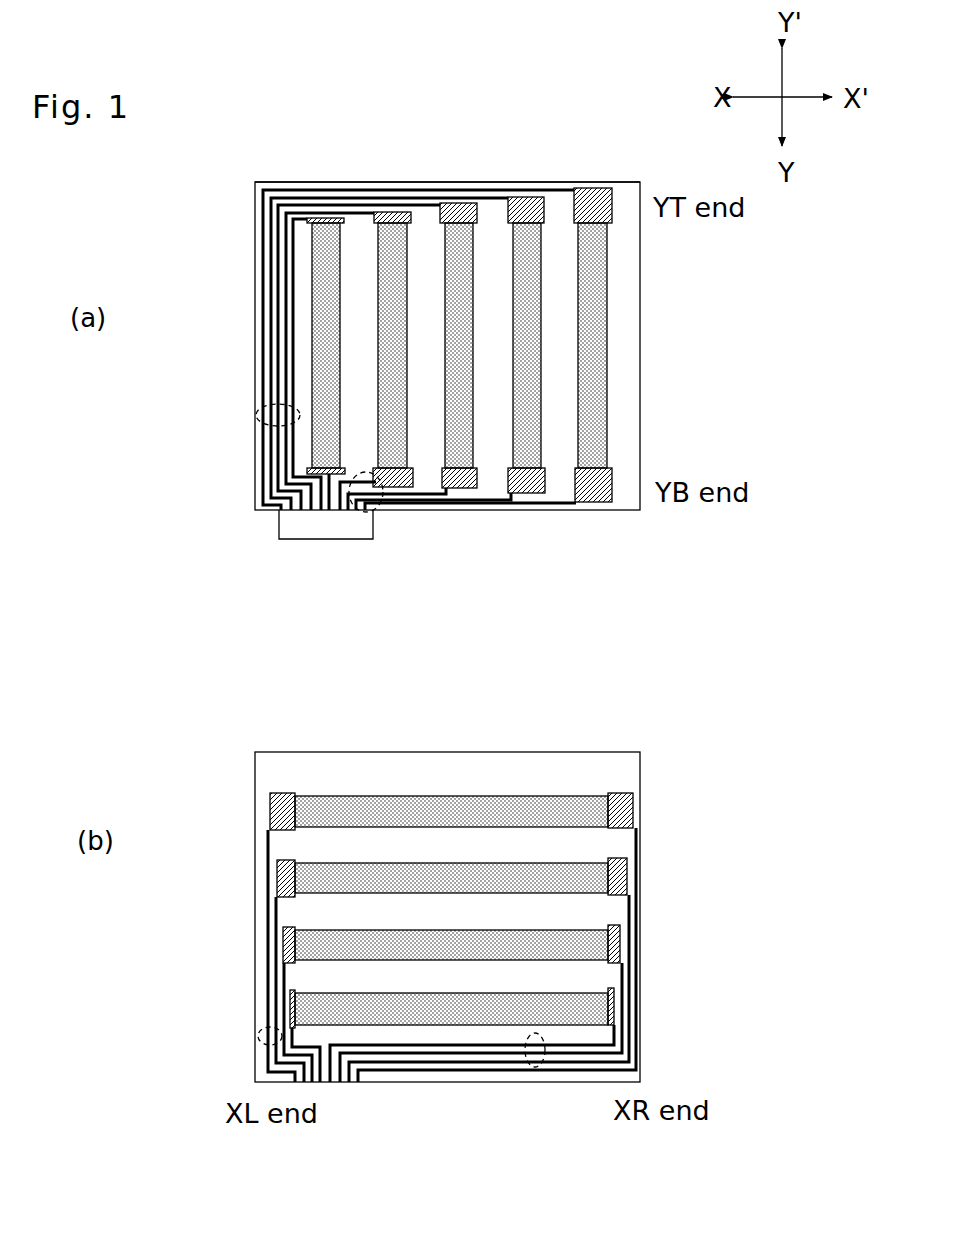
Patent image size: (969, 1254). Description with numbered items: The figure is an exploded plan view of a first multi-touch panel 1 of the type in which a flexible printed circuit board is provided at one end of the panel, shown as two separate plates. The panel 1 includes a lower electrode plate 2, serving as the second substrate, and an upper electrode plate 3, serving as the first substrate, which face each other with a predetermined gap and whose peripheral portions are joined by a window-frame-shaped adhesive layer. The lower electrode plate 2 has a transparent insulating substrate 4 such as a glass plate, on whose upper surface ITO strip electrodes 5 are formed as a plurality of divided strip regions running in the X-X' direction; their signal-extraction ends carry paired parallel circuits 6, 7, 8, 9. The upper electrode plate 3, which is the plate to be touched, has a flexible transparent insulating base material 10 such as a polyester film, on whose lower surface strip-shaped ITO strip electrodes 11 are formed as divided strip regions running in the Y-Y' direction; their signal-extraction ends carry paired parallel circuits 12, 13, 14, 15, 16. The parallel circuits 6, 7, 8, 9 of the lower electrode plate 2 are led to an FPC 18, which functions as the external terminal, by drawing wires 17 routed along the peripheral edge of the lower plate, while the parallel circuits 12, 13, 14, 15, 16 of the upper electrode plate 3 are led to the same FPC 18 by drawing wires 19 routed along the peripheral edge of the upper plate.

The first multi-touch panel 1 is at (752, 273).
The lower electrode plate 2 is at (664, 888).
The upper electrode plate 3 is at (656, 345).
The transparent insulating substrate 4 is at (628, 762).
The strip electrodes 5 is at (568, 872).
The paired parallel circuit 6 is at (293, 1008).
The paired parallel circuit 7 is at (285, 945).
The paired parallel circuit 8 is at (283, 880).
The paired parallel circuit 9 is at (273, 813).
The flexible transparent insulating base material 10 is at (622, 193).
The strip electrodes 11 is at (532, 277).
The paired parallel circuit 12 is at (322, 218).
The paired parallel circuit 13 is at (394, 213).
The paired parallel circuit 14 is at (462, 203).
The paired parallel circuit 15 is at (548, 197).
The paired parallel circuit 16 is at (616, 189).
The drawing wires 17 is at (256, 1038).
The FPC 18 is at (375, 539).
The drawing wires 19 is at (255, 400).